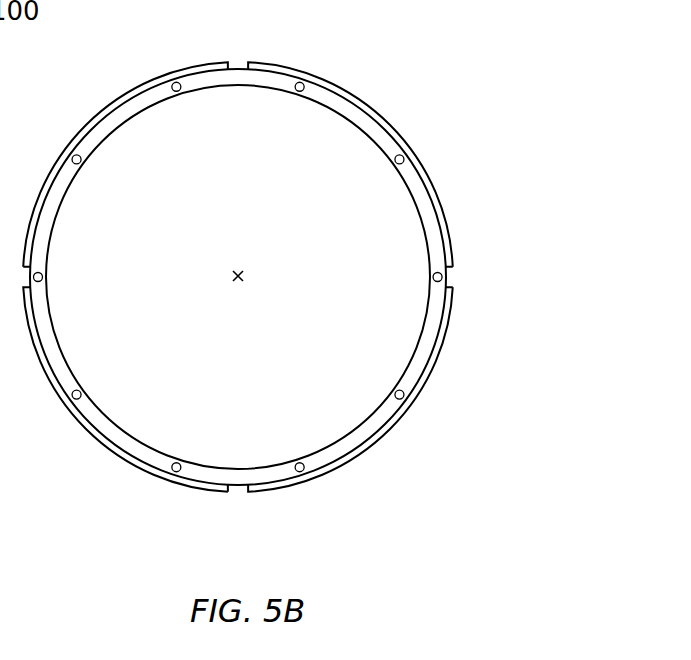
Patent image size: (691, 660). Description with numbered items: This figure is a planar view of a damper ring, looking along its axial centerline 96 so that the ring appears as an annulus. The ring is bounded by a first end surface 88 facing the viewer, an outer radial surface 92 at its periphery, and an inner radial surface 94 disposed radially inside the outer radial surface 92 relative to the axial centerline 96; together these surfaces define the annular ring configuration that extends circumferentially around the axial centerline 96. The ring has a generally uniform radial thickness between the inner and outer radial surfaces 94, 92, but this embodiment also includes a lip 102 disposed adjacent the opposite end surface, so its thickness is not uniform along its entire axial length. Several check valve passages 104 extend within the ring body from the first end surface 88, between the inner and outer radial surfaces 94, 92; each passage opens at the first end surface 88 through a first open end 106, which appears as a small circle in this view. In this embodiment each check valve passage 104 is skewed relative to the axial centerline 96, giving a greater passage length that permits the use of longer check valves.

The first end surface 88 is at (358, 437).
The outer radial surface 92 is at (244, 62).
The inner radial surface 94 is at (135, 112).
The axial centerline 96 is at (244, 277).
The lip 102 is at (143, 472).
The check valve passage 104 is at (416, 146).
The first open end 106 is at (78, 399).